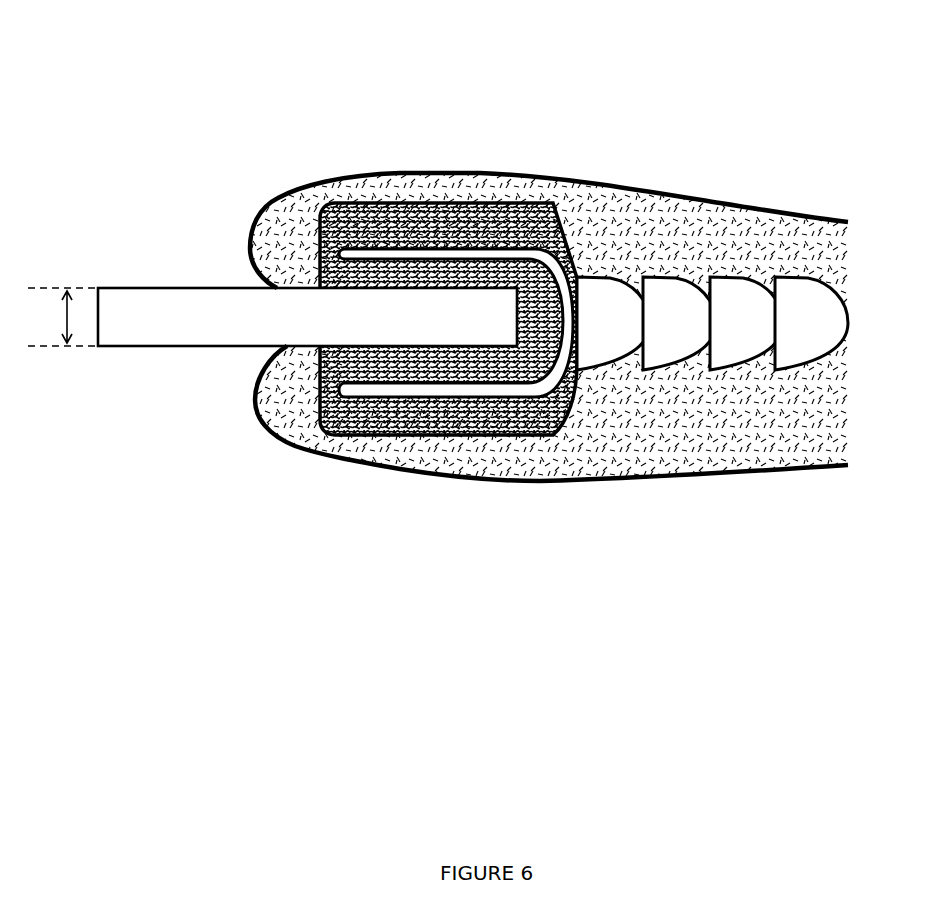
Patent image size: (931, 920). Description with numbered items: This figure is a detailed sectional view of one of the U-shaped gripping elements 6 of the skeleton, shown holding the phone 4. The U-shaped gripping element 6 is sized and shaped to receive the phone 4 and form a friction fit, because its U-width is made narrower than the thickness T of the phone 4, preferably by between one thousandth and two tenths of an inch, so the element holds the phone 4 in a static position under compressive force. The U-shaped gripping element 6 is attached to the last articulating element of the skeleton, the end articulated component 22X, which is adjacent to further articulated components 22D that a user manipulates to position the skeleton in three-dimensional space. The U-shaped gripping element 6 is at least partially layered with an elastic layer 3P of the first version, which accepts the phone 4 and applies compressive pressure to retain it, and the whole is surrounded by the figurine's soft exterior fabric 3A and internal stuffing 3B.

The phone 4 is at (210, 287).
The elastic layer 3P is at (397, 222).
The U-shaped gripping element 6 is at (490, 250).
The end articulated component 22X is at (610, 280).
The articulated component 22D is at (665, 363).
The exterior fabric 3A is at (370, 462).
The internal stuffing 3B is at (603, 450).
The thickness of the phone T is at (61, 317).